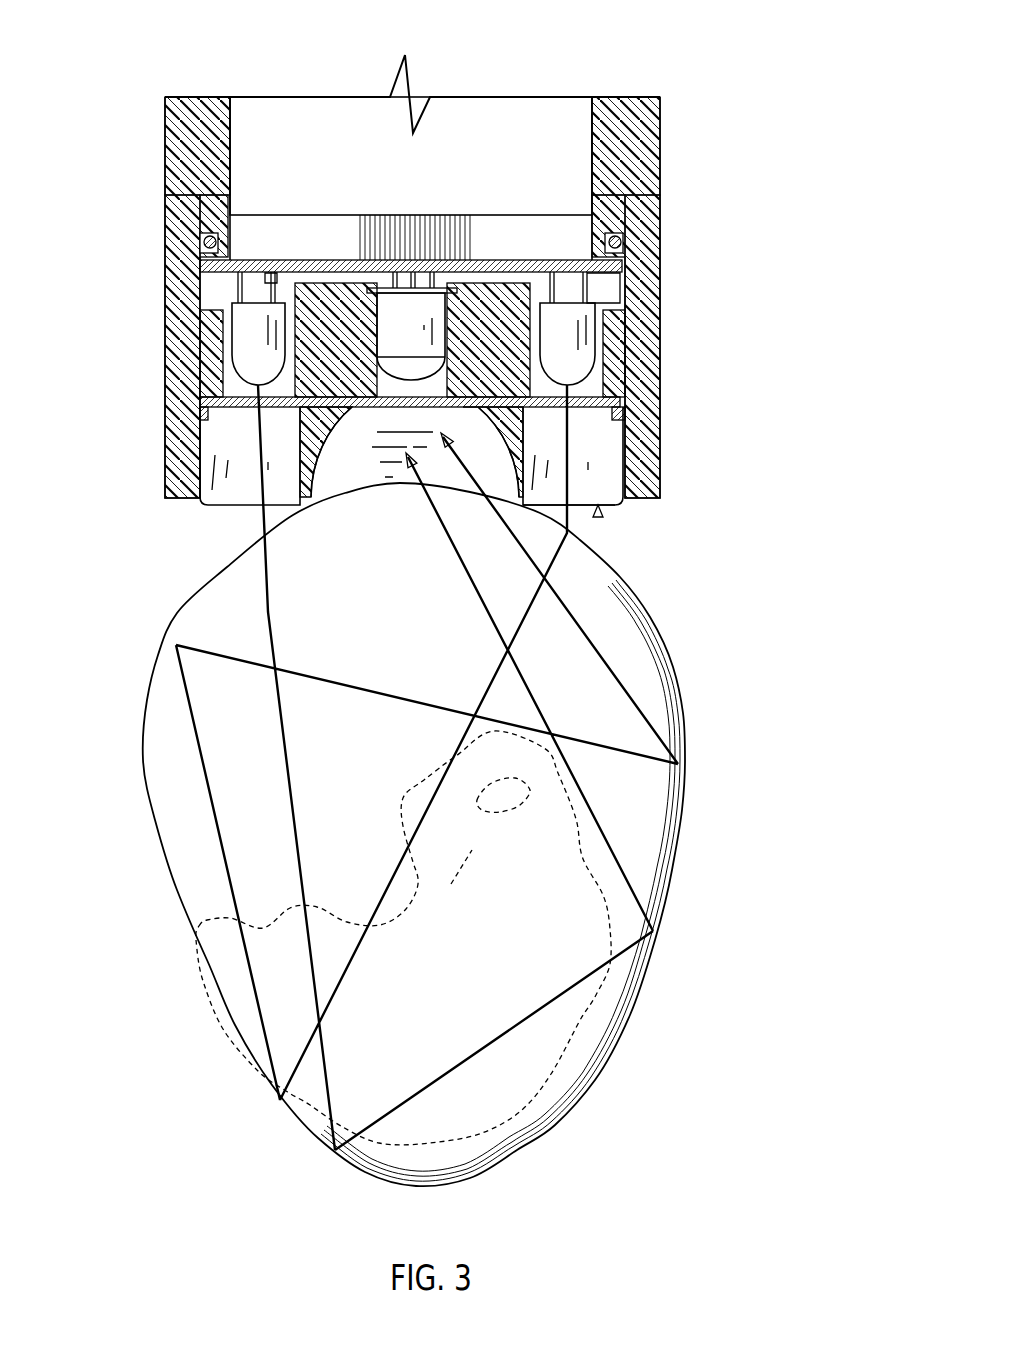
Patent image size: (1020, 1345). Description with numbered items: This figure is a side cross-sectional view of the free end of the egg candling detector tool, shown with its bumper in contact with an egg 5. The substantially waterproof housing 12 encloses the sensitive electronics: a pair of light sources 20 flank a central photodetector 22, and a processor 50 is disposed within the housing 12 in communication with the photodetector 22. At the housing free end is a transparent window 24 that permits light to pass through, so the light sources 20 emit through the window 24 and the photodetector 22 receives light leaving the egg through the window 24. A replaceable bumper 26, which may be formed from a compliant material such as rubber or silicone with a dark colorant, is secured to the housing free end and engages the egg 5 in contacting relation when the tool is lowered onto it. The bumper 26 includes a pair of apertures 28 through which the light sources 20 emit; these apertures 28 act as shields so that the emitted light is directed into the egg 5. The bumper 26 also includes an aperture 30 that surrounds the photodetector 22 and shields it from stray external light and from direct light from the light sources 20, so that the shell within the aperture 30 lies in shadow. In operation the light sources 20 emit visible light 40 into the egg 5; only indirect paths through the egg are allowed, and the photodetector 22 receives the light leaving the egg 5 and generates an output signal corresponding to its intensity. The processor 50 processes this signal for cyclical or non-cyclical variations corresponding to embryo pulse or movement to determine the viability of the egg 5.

The housing 12 is at (660, 137).
The processor 50 is at (537, 117).
The transparent window 24 is at (237, 405).
The light sources 20 is at (245, 342).
The photodetector 22 is at (395, 320).
The apertures 28 is at (213, 503).
The replaceable bumper 26 is at (598, 512).
The aperture 30 is at (351, 487).
The visible light 40 is at (268, 612).
The egg 5 is at (687, 743).